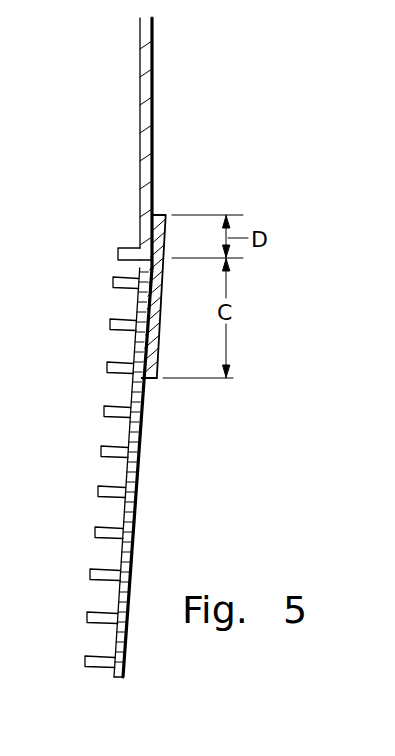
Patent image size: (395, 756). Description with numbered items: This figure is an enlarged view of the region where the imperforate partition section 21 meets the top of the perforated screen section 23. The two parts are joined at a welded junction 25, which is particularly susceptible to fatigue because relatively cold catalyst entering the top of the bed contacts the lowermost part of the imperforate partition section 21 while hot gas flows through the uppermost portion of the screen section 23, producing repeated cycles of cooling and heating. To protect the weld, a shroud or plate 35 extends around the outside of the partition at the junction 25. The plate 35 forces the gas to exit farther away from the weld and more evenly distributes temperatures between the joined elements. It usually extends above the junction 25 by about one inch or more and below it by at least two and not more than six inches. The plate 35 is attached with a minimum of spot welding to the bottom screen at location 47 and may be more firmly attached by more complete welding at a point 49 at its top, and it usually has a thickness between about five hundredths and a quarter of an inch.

The imperforate partition section 21 is at (140, 149).
The point at the top of plate 49 is at (153, 214).
The location on the bottom screen 47 is at (147, 380).
The junction 25 is at (145, 267).
The shroud 35 is at (148, 300).
The screen section 23 is at (128, 436).